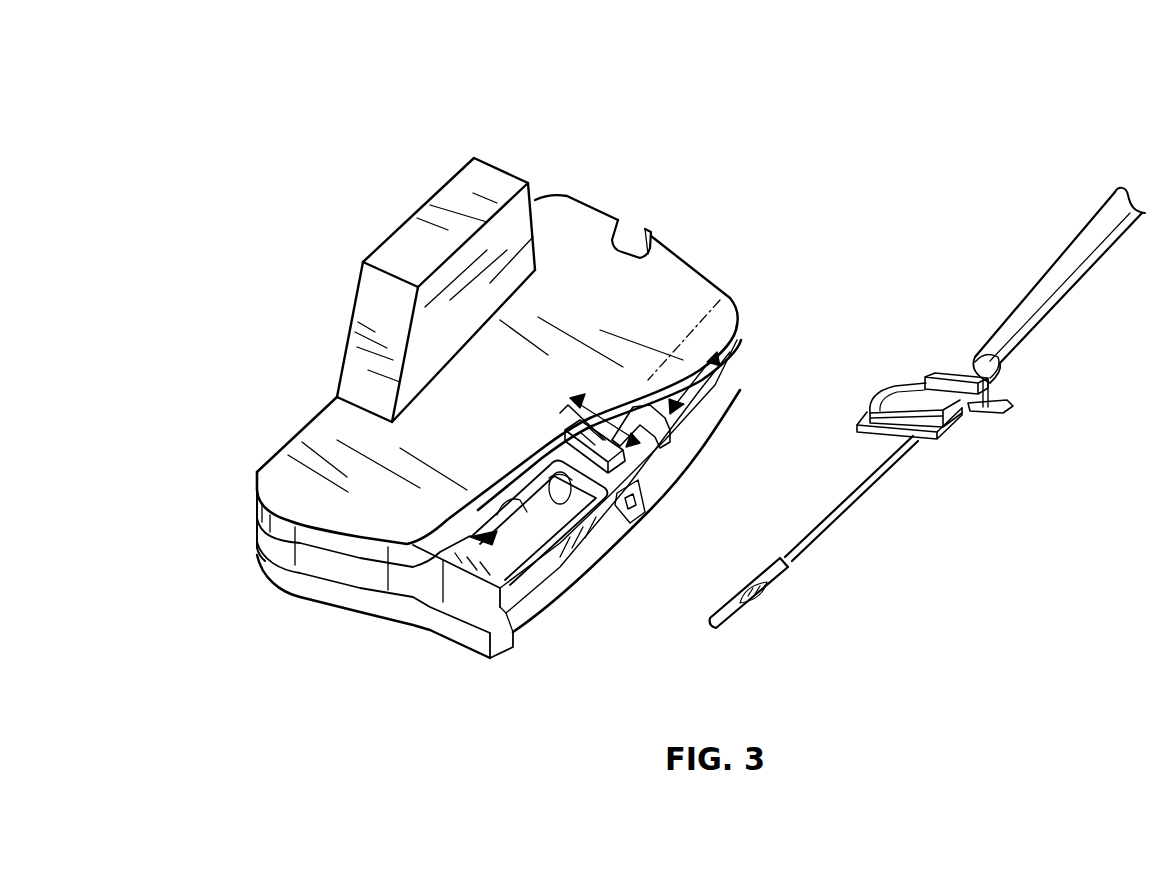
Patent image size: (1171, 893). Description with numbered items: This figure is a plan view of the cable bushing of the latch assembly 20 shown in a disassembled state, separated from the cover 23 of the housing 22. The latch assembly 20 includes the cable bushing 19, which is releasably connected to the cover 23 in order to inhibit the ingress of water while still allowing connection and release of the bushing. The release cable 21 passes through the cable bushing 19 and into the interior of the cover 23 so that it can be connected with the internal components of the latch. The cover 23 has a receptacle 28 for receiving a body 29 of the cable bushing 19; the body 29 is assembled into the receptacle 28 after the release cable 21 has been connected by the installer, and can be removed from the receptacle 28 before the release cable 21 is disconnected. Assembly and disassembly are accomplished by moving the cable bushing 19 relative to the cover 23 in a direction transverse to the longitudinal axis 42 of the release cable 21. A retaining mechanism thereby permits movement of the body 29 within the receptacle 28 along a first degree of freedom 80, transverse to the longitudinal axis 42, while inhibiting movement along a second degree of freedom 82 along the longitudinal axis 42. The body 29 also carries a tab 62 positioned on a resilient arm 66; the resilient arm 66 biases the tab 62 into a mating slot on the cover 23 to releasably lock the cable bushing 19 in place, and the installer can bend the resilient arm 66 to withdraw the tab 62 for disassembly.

The latch assembly 20 is at (563, 160).
The cover 23 is at (593, 223).
The longitudinal axis 42 is at (690, 328).
The housing 22 is at (745, 388).
The first degree of freedom 80 is at (600, 453).
The second degree of freedom 82 is at (696, 382).
The receptacle 28 is at (473, 540).
The release cable 21 is at (1087, 240).
The cable bushing 19 is at (933, 403).
The body 29 is at (862, 417).
The tab 62 is at (1013, 403).
The resilient arm 66 is at (982, 410).